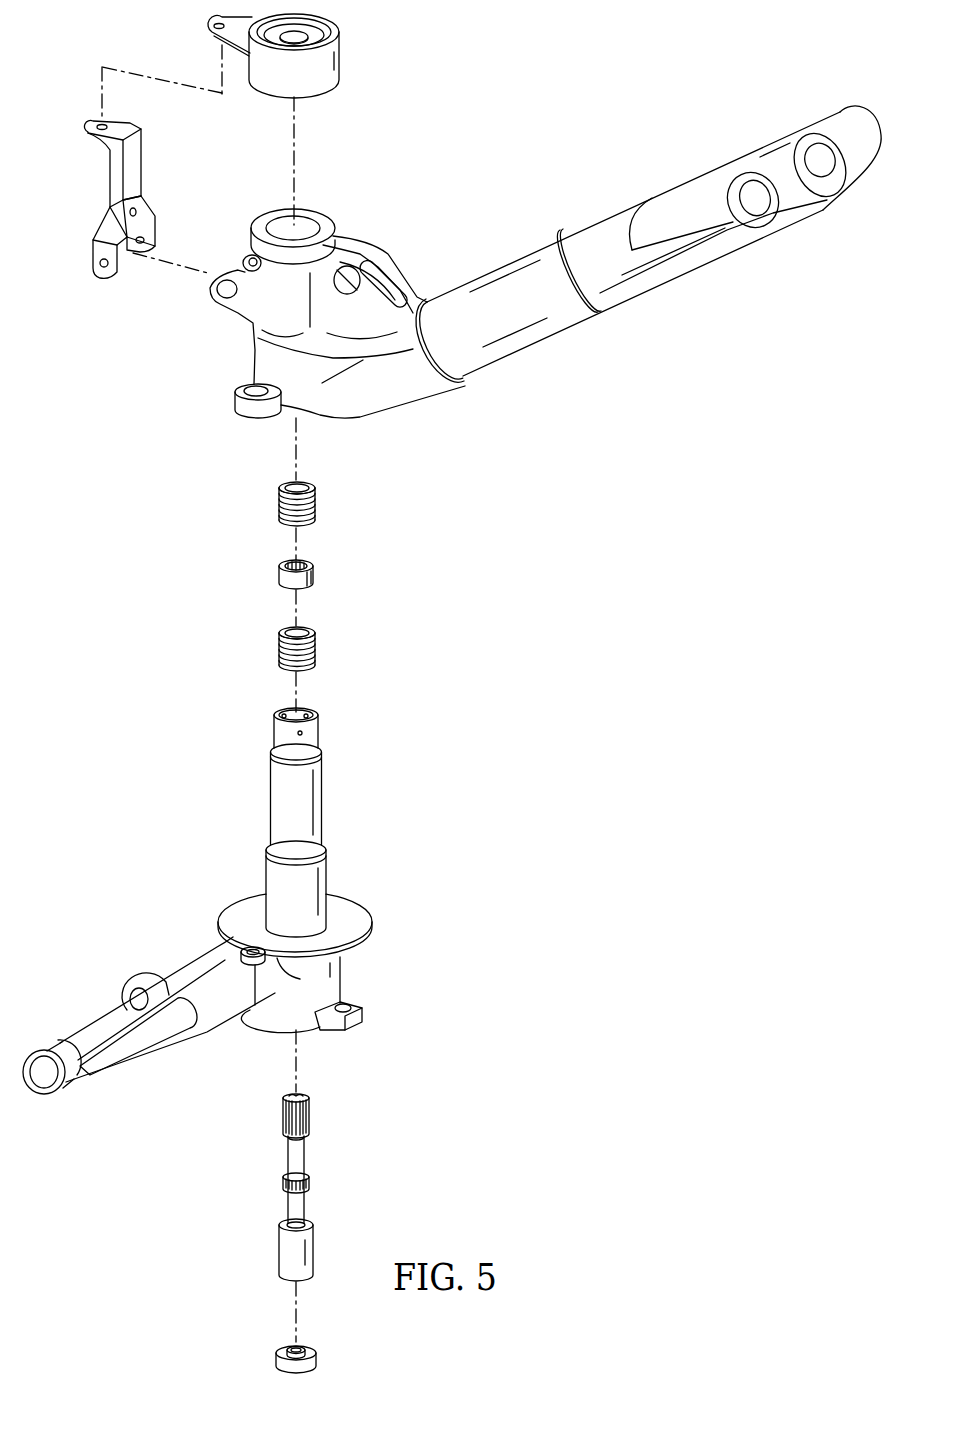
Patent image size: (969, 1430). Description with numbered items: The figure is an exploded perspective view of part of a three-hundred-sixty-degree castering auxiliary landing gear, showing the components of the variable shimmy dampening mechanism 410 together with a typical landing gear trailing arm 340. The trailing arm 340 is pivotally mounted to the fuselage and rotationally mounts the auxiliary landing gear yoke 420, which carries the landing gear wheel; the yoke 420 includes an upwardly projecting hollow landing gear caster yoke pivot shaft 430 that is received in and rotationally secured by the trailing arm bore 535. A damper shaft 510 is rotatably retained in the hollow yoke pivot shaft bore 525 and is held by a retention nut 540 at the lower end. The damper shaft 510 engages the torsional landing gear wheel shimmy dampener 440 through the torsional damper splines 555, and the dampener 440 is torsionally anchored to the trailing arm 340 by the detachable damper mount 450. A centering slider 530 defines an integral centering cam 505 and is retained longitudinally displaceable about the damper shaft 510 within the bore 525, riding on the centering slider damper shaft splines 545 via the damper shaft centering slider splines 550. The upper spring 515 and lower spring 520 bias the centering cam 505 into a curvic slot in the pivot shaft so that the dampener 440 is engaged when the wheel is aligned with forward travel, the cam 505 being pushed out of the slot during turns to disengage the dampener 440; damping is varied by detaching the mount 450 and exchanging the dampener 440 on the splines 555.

The variable shimmy dampening mechanism 410 is at (552, 60).
The landing gear wheel shimmy dampener 440 is at (341, 57).
The damper mount 450 is at (108, 177).
The landing gear trailing arm 340 is at (528, 352).
The landing gear trailing arm bore 535 is at (312, 233).
The upper spring 515 is at (278, 499).
The centering slider 530 is at (276, 579).
The damper shaft centering slider splines 550 is at (302, 562).
The centering cam 505 is at (313, 586).
The lower spring 520 is at (278, 648).
The hollow yoke pivot shaft bore 525 is at (281, 718).
The landing gear caster yoke pivot shaft 430 is at (270, 791).
The auxiliary landing gear yoke 420 is at (195, 959).
The torsional damper splines 555 is at (282, 1114).
The centering slider damper shaft splines 545 is at (282, 1179).
The damper shaft 510 is at (307, 1203).
The retention nut 540 is at (272, 1347).